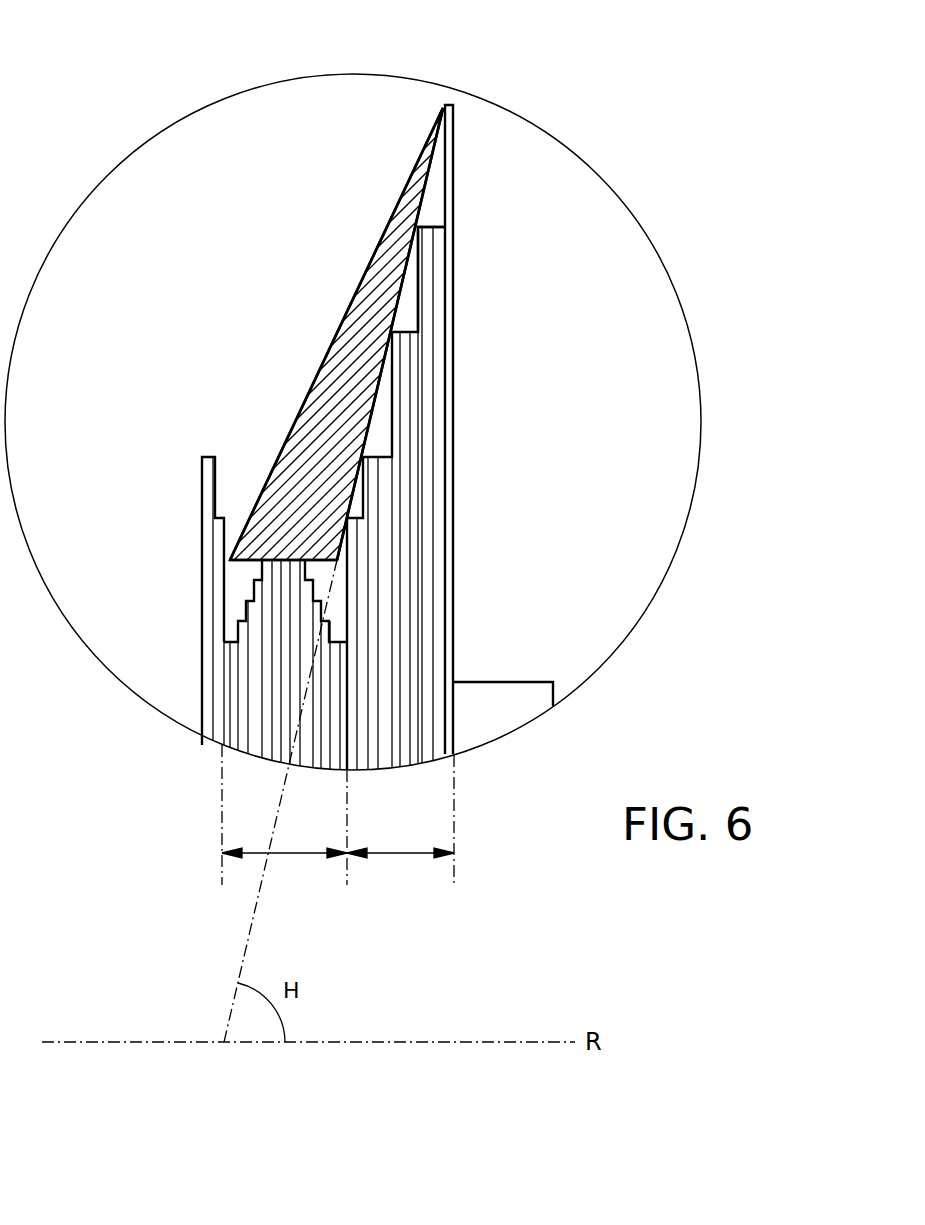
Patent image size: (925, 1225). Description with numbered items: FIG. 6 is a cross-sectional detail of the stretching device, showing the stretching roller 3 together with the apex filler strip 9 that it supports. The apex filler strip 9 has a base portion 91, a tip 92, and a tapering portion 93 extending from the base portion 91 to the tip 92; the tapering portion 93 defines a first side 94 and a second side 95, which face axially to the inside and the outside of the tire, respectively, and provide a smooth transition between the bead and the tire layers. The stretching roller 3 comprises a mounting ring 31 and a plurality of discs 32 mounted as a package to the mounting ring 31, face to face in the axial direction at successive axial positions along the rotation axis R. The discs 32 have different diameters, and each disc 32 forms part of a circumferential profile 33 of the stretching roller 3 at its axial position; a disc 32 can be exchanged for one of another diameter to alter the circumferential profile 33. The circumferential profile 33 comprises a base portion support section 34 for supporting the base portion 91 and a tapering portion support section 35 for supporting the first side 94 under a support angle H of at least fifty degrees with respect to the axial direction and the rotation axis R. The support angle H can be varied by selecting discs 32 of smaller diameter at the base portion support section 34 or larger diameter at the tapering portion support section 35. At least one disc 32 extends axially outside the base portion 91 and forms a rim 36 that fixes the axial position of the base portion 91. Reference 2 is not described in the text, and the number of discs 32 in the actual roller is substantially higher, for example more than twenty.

The pipe body 2 is at (541, 467).
The stretching roller 3 is at (457, 588).
The mounting ring 31 is at (525, 692).
The discs 32 is at (433, 432).
The circumferential profile 33 is at (246, 604).
The base portion support section 34 is at (284, 819).
The tapering portion support section 35 is at (400, 825).
The rim section 36 is at (202, 527).
The apex filler strip 9 is at (312, 180).
The base portion 91 is at (257, 523).
The tip 92 is at (430, 135).
The tapering portion 93 is at (347, 343).
The first side 94 is at (404, 287).
The second side 95 is at (305, 430).